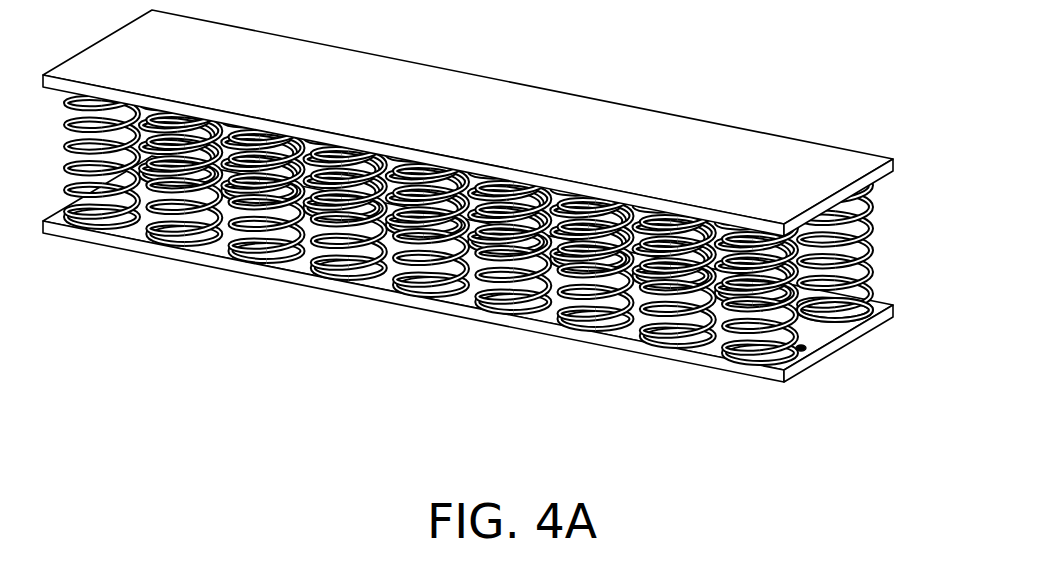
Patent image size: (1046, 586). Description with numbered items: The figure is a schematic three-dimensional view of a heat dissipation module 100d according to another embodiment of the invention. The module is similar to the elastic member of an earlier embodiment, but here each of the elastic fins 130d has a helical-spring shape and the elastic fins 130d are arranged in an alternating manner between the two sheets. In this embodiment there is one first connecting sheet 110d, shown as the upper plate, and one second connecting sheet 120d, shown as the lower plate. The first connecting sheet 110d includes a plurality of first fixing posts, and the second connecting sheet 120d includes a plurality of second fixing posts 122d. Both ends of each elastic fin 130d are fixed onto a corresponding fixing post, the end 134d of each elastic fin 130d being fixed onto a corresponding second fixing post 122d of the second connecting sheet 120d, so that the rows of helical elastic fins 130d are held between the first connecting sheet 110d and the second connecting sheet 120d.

The heat dissipation module 100d is at (945, 483).
The first connecting sheet 110d is at (780, 158).
The second connecting sheet 120d is at (658, 348).
The second fixing post 122d is at (605, 302).
The elastic fin 130d is at (863, 247).
The end of elastic fin 134d is at (808, 343).